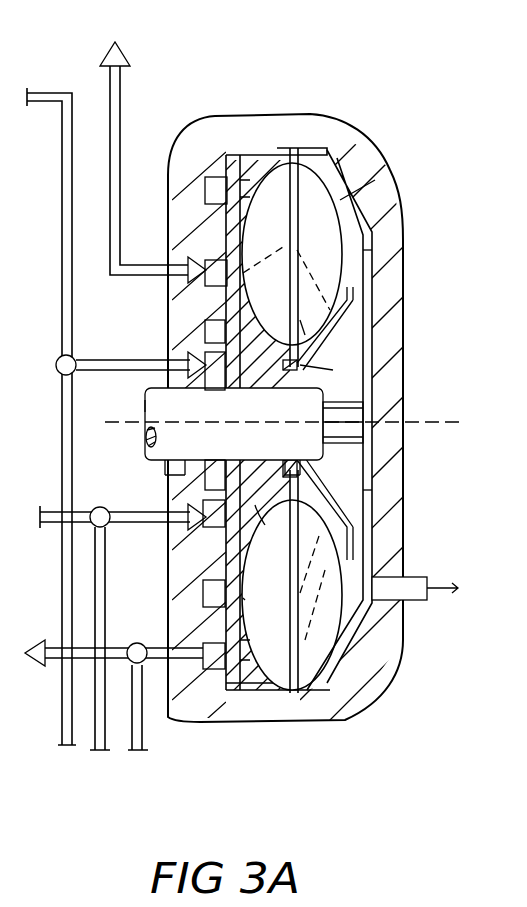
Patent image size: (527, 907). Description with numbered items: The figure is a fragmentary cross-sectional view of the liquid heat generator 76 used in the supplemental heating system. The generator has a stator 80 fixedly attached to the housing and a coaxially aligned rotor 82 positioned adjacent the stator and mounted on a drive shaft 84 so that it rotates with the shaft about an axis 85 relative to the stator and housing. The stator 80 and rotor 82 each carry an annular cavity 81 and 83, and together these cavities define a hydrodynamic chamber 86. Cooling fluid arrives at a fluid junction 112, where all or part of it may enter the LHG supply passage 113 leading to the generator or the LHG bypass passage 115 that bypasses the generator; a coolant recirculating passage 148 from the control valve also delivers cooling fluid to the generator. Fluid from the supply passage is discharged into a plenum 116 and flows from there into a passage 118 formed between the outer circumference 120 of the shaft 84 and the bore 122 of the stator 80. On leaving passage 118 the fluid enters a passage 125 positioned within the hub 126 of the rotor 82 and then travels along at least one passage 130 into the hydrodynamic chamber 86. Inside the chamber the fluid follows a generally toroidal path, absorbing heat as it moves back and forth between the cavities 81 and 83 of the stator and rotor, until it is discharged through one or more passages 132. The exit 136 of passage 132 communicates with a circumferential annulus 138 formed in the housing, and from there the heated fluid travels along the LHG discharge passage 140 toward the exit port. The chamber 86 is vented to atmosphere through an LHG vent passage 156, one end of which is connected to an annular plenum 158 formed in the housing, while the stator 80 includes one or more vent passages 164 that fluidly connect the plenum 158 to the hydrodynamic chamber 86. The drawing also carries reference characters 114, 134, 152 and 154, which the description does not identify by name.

The liquid heat generator 76 is at (326, 117).
The stator 80 is at (270, 175).
The annular cavity 81 is at (277, 605).
The rotor 82 is at (363, 263).
The annular cavity 83 is at (330, 623).
The drive shaft 84 is at (140, 407).
The axis 85 is at (137, 425).
The hydrodynamic chamber 86 is at (367, 137).
The fluid junction 112 is at (58, 373).
The LHG supply passage 113 is at (120, 355).
The center block 114 is at (217, 380).
The LHG bypass passage 115 is at (60, 585).
The plenum 116 is at (227, 467).
The passage 118 is at (333, 370).
The outer circumference 120 is at (243, 460).
The bore 122 is at (243, 395).
The passage 125 is at (360, 500).
The hub 126 is at (372, 445).
The passage 130 is at (372, 225).
The passage 132 is at (237, 660).
The rotor 134 is at (270, 735).
The exit 136 is at (243, 190).
The circumferential annulus 138 is at (213, 177).
The LHG discharge passage 140 is at (92, 660).
The coolant recirculating passage 148 is at (128, 522).
The feed port 152 is at (205, 517).
The lower rotor face 154 is at (269, 535).
The LHG vent passage 156 is at (110, 85).
The annular plenum 158 is at (207, 265).
The vent passages 164 is at (280, 308).